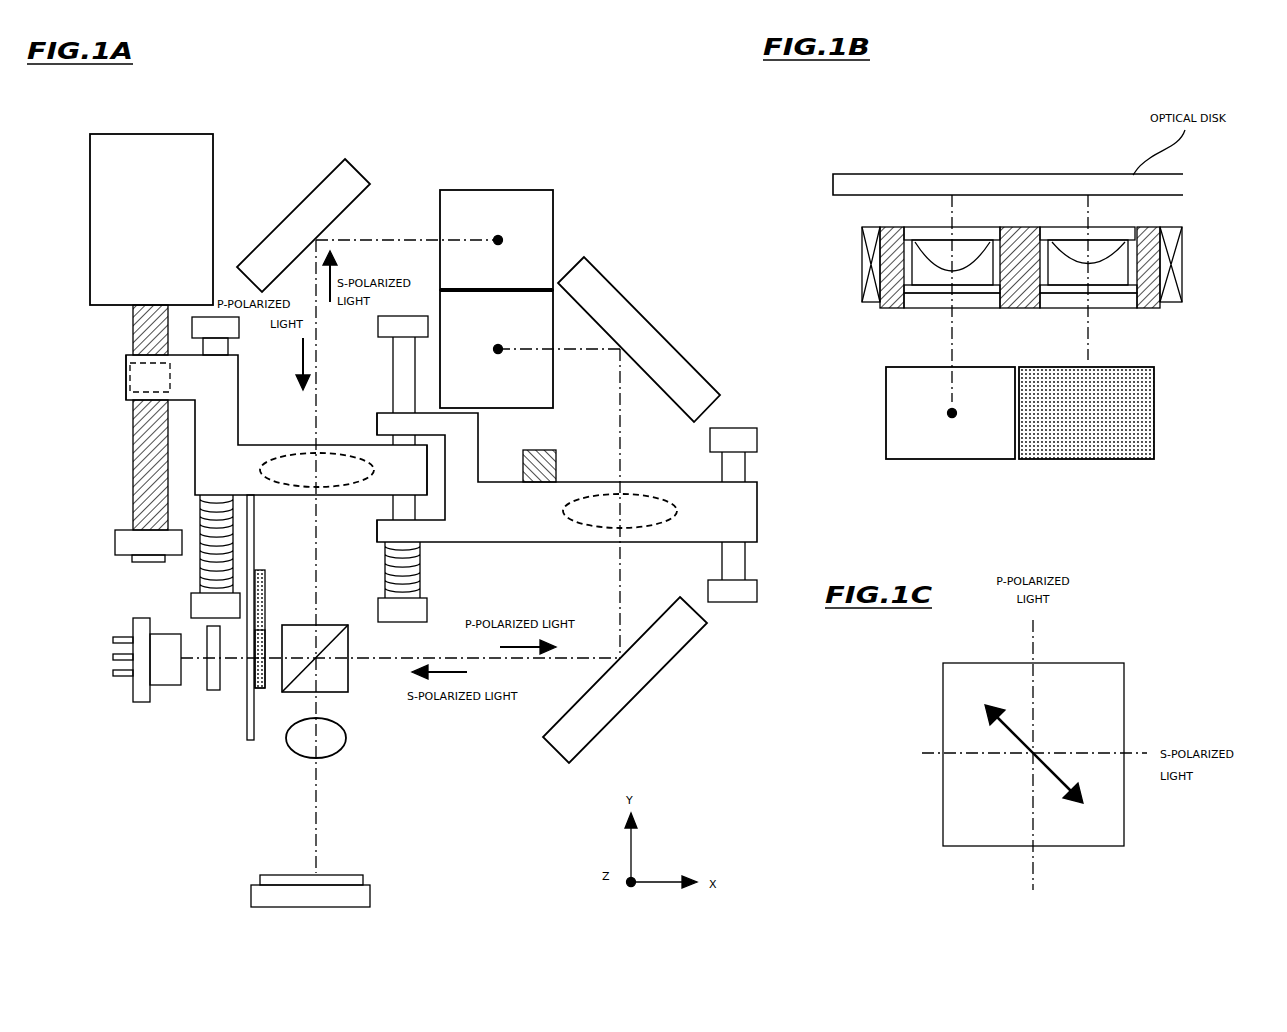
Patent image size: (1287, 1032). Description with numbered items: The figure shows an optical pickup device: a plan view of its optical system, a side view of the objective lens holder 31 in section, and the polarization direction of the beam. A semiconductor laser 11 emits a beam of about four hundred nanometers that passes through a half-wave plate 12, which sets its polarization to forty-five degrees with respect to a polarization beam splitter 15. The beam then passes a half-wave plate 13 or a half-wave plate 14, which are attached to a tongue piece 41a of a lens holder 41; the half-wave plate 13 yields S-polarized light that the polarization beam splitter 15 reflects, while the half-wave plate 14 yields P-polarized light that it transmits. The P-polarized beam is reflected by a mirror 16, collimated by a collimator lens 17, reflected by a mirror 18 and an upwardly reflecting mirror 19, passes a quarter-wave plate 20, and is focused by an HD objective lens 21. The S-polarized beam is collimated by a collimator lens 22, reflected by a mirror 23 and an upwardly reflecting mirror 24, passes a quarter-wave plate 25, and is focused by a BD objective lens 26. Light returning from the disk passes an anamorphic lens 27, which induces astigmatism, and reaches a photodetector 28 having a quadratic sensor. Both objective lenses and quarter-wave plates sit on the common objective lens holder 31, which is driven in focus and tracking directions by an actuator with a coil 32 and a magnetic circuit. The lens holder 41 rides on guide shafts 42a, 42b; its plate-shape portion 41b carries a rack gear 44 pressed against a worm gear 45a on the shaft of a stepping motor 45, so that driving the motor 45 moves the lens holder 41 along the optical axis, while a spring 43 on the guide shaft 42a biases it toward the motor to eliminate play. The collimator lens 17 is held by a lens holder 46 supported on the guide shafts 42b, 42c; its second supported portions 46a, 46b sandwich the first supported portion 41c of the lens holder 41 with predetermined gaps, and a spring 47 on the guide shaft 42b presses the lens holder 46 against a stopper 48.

In FIG. 1A, the semiconductor laser 11 is at (148, 712).
In FIG. 1A, the half-wave plate 12 is at (208, 690).
In FIG. 1A, the half-wave plate 13 is at (265, 630).
In FIG. 1A, the half-wave plate 14 is at (265, 572).
In FIG. 1A, the polarization beam splitter 15 is at (340, 685).
In FIG. 1C, the polarization beam splitter 15 is at (1113, 686).
In FIG. 1A, the mirror 16 is at (648, 665).
In FIG. 1A, the collimator lens 17 is at (642, 527).
In FIG. 1A, the mirror 18 is at (622, 317).
In FIG. 1A, the upwardly reflecting mirror 19 is at (530, 358).
In FIG. 1B, the upwardly reflecting mirror 19 is at (1110, 460).
In FIG. 1B, the quarter-wave plate 20 is at (1098, 296).
In FIG. 1B, the HD objective lens 21 is at (1065, 230).
In FIG. 1A, the collimator lens 22 is at (297, 470).
In FIG. 1A, the mirror 23 is at (327, 186).
In FIG. 1A, the upwardly reflecting mirror 24 is at (540, 221).
In FIG. 1B, the upwardly reflecting mirror 24 is at (920, 445).
In FIG. 1B, the quarter-wave plate 25 is at (930, 288).
In FIG. 1B, the BD objective lens 26 is at (925, 230).
In FIG. 1A, the anamorphic lens 27 is at (305, 745).
In FIG. 1A, the photodetector 28 is at (345, 876).
In FIG. 1B, the objective lens holder 31 is at (1150, 308).
In FIG. 1B, the drive coil 32 is at (860, 252).
In FIG. 1A, the lens holder 41 is at (330, 447).
In FIG. 1A, the tongue piece 41a is at (247, 740).
In FIG. 1A, the plate-shape portion 41b is at (126, 403).
In FIG. 1A, the first supported portion 41c is at (402, 472).
In FIG. 1A, the guide shaft 42a is at (213, 345).
In FIG. 1A, the guide shaft 42b is at (400, 380).
In FIG. 1A, the guide shaft 42c is at (722, 465).
In FIG. 1A, the spring 43 is at (200, 570).
In FIG. 1A, the rack gear 44 is at (122, 356).
In FIG. 1A, the motor 45 is at (155, 145).
In FIG. 1A, the worm gear 45a is at (135, 488).
In FIG. 1A, the lens holder 46 is at (535, 535).
In FIG. 1A, the second supported portion 46a is at (420, 420).
In FIG. 1A, the second supported portion 46b is at (420, 530).
In FIG. 1A, the spring 47 is at (420, 572).
In FIG. 1A, the stopper 48 is at (556, 466).